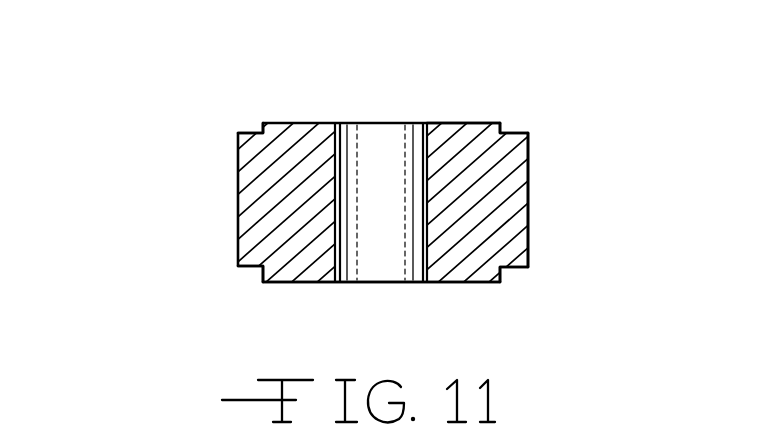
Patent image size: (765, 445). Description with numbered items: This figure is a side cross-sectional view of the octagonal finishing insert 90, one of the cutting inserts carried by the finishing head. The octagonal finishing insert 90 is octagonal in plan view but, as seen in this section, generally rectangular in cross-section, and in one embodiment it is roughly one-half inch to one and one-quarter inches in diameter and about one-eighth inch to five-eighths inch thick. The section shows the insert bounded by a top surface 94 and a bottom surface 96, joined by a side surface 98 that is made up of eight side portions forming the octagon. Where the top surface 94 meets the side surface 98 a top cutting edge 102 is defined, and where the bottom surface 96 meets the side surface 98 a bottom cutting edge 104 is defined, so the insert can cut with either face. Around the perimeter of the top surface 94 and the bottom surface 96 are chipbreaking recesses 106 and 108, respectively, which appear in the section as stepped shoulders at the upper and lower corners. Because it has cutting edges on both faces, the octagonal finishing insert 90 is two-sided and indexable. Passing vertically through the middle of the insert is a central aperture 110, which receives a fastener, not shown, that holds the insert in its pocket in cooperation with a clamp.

The octagonal finishing insert 90 is at (112, 139).
The top surface 94 is at (445, 122).
The bottom surface 96 is at (455, 283).
The side surface 98 is at (530, 183).
The top cutting edge 102 is at (233, 132).
The bottom cutting edge 104 is at (240, 266).
The chipbreaking recess 106 is at (517, 130).
The chipbreaking recess 108 is at (513, 268).
The central aperture 110 is at (345, 161).